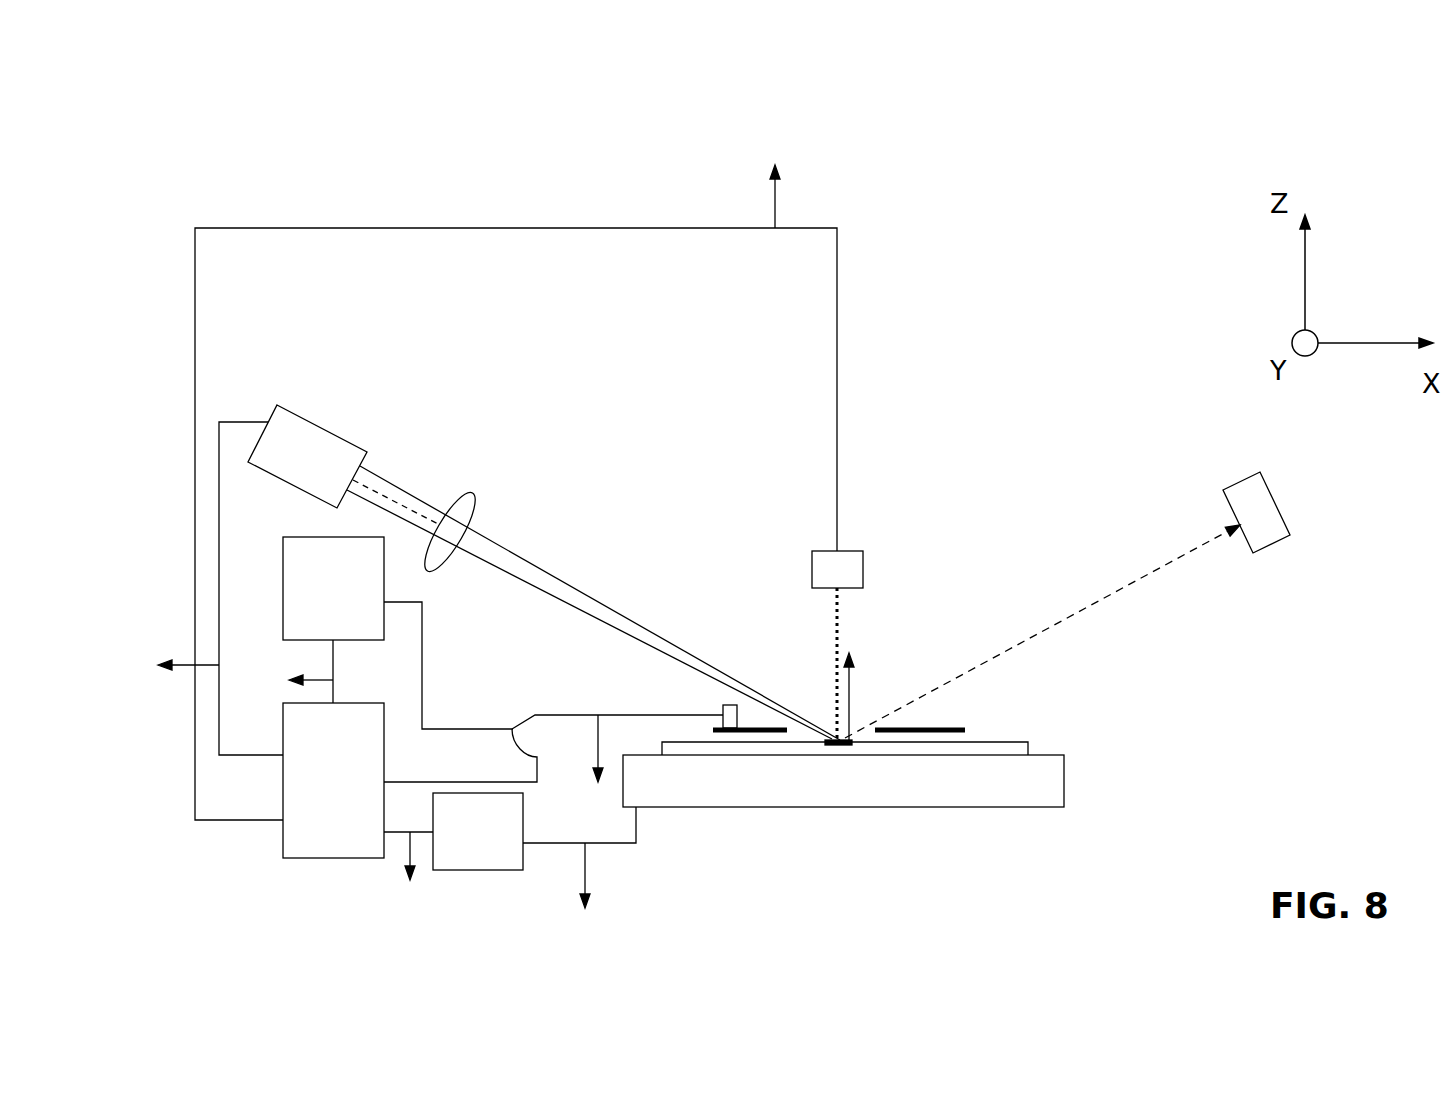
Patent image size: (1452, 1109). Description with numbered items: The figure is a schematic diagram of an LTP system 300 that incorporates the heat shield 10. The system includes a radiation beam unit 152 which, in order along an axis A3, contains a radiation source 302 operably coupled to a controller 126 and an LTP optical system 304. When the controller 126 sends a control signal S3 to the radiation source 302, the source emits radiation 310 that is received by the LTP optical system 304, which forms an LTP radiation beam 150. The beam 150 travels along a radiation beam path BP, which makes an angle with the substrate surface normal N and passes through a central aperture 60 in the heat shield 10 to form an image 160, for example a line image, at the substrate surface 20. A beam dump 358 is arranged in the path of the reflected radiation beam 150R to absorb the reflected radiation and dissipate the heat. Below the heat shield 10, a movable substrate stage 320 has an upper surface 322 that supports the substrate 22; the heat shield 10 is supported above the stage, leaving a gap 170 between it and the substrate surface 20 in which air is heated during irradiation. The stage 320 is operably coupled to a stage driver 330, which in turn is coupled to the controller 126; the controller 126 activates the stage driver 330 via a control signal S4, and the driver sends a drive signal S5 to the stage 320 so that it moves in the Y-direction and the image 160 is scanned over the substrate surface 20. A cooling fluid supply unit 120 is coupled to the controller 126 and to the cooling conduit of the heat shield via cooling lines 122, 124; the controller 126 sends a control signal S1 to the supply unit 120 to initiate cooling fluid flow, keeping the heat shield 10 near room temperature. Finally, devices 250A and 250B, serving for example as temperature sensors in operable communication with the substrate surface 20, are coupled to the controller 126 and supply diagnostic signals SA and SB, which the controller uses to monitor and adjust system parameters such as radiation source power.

The LTP system 300 is at (1165, 145).
The diagnostic signal SB is at (777, 202).
The radiation beam unit 152 is at (373, 297).
The radiation source 302 is at (312, 420).
The radiation 310 is at (373, 468).
The LTP optical system 304 is at (466, 487).
The axis A3 is at (395, 498).
The LTP radiation beam 150 is at (550, 573).
The radiation beam path BP is at (645, 603).
The device 250B is at (863, 563).
The substrate surface normal N is at (852, 663).
The central aperture 60 is at (870, 704).
The beam dump 358 is at (1267, 498).
The reflected radiation beam 150R is at (1177, 562).
The heat shield 10 is at (990, 720).
The gap 170 is at (992, 723).
The substrate 22 is at (1020, 740).
The substrate stage 320 is at (775, 797).
The upper surface 322 is at (1055, 752).
The image 160 is at (838, 745).
The substrate surface 20 is at (673, 742).
The cooling fluid supply unit 120 is at (358, 608).
The cooling line 122 is at (422, 666).
The cooling line 124 is at (474, 665).
The device 250A is at (720, 702).
The diagnostic signal SA is at (596, 775).
The control signal S1 is at (292, 676).
The control signal S3 is at (175, 670).
The controller 126 is at (357, 798).
The control signal S4 is at (412, 884).
The stage driver 330 is at (502, 848).
The drive signal S5 is at (593, 900).